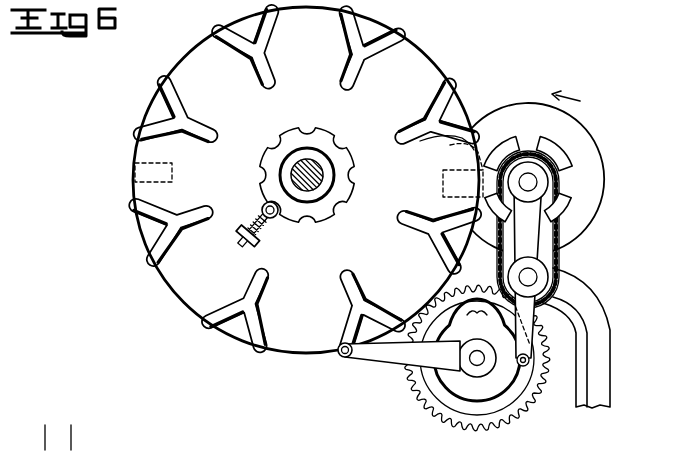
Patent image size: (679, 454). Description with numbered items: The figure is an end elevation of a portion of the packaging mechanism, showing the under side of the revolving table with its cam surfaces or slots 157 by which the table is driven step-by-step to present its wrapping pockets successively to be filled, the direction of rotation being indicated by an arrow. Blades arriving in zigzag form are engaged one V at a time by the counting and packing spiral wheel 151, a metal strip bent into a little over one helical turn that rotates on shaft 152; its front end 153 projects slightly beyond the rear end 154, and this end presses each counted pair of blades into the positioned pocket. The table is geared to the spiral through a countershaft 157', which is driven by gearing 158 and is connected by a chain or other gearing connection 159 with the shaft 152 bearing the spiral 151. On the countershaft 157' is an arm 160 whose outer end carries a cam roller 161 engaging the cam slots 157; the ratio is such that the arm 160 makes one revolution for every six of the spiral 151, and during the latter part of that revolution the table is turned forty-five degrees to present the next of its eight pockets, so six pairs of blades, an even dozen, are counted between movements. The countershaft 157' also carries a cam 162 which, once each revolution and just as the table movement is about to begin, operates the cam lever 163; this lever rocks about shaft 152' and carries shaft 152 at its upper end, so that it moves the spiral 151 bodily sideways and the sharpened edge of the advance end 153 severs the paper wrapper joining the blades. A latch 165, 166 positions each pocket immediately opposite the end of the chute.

The counting and packing spiral wheel 151 is at (593, 173).
The shaft 152 is at (580, 184).
The shaft 152' is at (575, 279).
The front end of the spiral 153 is at (470, 150).
The rear end of the spiral 154 is at (478, 122).
The cam slots 157 is at (306, 180).
The countershaft 157' is at (420, 380).
The gearing 158 is at (508, 421).
The chain or gearing connection 159 is at (548, 264).
The arm 160 is at (387, 353).
The cam roller 161 is at (340, 353).
The cam 162 is at (467, 407).
The cam lever 163 is at (548, 245).
The latch 165 is at (258, 228).
The latch 166 is at (309, 223).